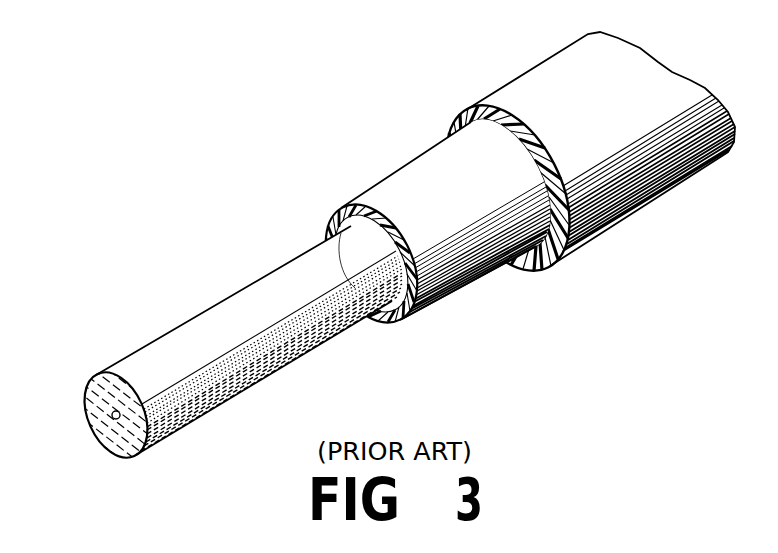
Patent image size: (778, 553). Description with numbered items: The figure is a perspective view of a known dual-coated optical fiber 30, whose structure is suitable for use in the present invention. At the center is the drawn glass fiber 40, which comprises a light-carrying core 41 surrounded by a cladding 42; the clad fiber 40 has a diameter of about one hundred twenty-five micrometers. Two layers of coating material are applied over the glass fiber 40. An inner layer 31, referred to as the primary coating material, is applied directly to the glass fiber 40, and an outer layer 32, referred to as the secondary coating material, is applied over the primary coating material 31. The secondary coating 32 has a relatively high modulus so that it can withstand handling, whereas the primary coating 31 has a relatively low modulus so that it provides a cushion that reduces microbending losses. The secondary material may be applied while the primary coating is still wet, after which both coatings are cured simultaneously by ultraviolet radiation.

The dual-coated optical fiber 30 is at (553, 42).
The inner layer 31 is at (415, 170).
The outer layer 32 is at (503, 95).
The glass fiber 40 is at (218, 290).
The light-carrying core 41 is at (112, 416).
The cladding 42 is at (90, 387).